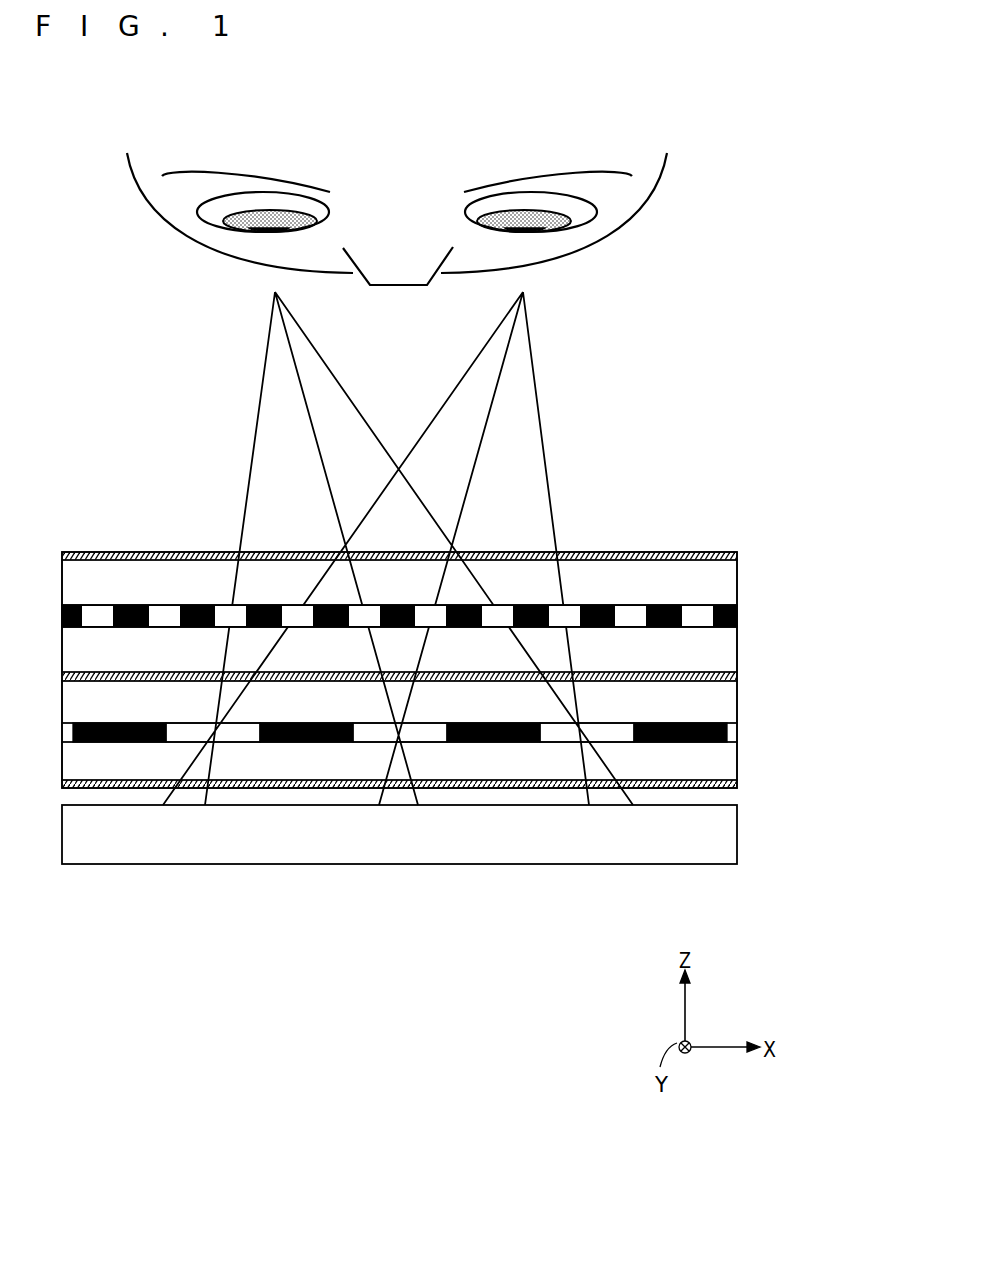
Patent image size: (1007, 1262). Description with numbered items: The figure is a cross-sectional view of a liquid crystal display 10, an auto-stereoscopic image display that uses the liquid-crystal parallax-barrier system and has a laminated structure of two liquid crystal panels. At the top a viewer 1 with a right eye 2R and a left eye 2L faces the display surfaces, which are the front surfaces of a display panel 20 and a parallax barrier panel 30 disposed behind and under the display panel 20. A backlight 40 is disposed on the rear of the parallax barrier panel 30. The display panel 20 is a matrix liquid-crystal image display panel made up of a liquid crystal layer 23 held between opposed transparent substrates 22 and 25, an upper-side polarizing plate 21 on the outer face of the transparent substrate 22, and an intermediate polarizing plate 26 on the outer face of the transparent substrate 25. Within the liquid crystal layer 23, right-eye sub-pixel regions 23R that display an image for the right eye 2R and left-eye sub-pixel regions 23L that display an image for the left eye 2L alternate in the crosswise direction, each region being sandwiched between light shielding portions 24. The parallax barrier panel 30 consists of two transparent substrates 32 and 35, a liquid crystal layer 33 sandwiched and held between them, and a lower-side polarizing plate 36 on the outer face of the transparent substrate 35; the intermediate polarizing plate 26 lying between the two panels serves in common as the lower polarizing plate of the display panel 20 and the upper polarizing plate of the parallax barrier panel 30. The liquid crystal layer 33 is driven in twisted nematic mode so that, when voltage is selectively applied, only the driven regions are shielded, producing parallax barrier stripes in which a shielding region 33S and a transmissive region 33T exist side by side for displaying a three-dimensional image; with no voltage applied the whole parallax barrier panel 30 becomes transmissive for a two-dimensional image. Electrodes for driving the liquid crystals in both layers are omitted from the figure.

The viewer 1 is at (411, 219).
The right eye 2R is at (197, 213).
The left eye 2L is at (598, 213).
The liquid crystal display 10 is at (649, 500).
The display panel 20 is at (56, 552).
The upper-side polarizing plate 21 is at (737, 557).
The transparent substrate 22 is at (733, 589).
The liquid crystal layer 23 is at (423, 576).
The right-eye sub-pixel region 23R is at (619, 610).
The left-eye sub-pixel region 23L is at (155, 610).
The light shielding portion 24 is at (398, 605).
The transparent substrate 25 is at (733, 652).
The intermediate polarizing plate 26 is at (737, 677).
The parallax barrier panel 30 is at (56, 676).
The transparent substrate 32 is at (733, 709).
The liquid crystal layer 33 is at (423, 722).
The shielding region 33S is at (485, 732).
The transmissive region 33T is at (600, 732).
The transparent substrate 35 is at (733, 766).
The lower-side polarizing plate 36 is at (737, 784).
The backlight 40 is at (733, 826).